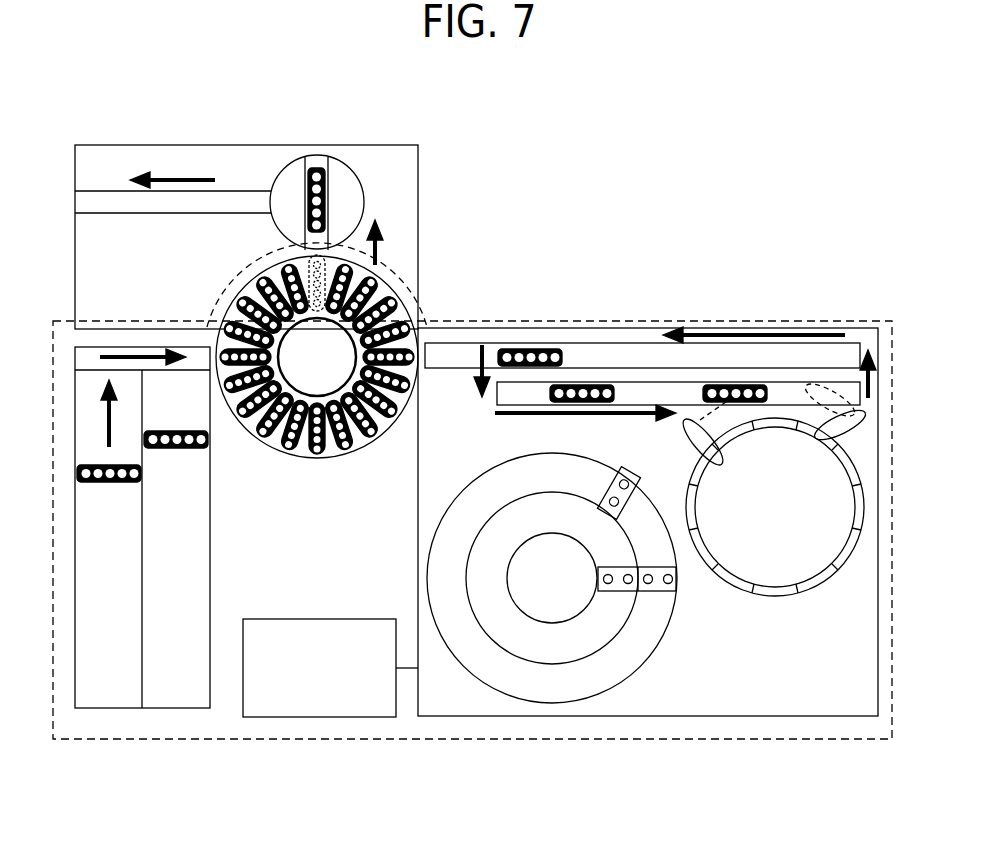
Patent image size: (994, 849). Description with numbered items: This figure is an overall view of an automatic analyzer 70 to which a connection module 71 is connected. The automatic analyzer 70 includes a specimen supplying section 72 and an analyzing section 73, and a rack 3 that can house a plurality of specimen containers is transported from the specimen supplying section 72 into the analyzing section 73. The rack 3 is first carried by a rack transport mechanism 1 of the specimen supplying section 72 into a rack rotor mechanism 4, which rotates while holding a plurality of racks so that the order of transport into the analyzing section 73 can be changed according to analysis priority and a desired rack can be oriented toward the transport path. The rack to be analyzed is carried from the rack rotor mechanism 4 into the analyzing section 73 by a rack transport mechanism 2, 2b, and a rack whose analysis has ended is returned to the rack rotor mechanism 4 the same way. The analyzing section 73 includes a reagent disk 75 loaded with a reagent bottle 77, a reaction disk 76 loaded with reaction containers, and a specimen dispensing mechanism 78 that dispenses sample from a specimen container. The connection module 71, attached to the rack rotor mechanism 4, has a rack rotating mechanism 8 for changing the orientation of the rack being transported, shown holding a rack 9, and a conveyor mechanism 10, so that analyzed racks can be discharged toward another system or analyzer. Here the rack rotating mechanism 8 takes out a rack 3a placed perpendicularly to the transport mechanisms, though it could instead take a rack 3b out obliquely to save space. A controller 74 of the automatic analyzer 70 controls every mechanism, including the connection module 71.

The rack transport mechanism 1 is at (474, 477).
The rack transport mechanism 2 is at (642, 313).
The rack transport mechanism 2b is at (655, 423).
The rack 3 is at (422, 402).
The rack 3a is at (270, 265).
The rack 3b is at (229, 281).
The rack rotor mechanism 4 is at (317, 382).
The rack rotating mechanism 8 is at (331, 200).
The specimen rack in transfer unit 9 is at (330, 202).
The conveyor mechanism 10 is at (173, 236).
The automatic analyzer 70 is at (472, 565).
The connection module 71 is at (271, 237).
The specimen supplying section 72 is at (168, 527).
The analyzing section 73 is at (676, 521).
The controller 74 is at (330, 638).
The reagent disk 75 is at (574, 578).
The reaction disk 76 is at (775, 530).
The reagent bottle 77 is at (665, 546).
The specimen dispensing mechanism 78 is at (759, 434).